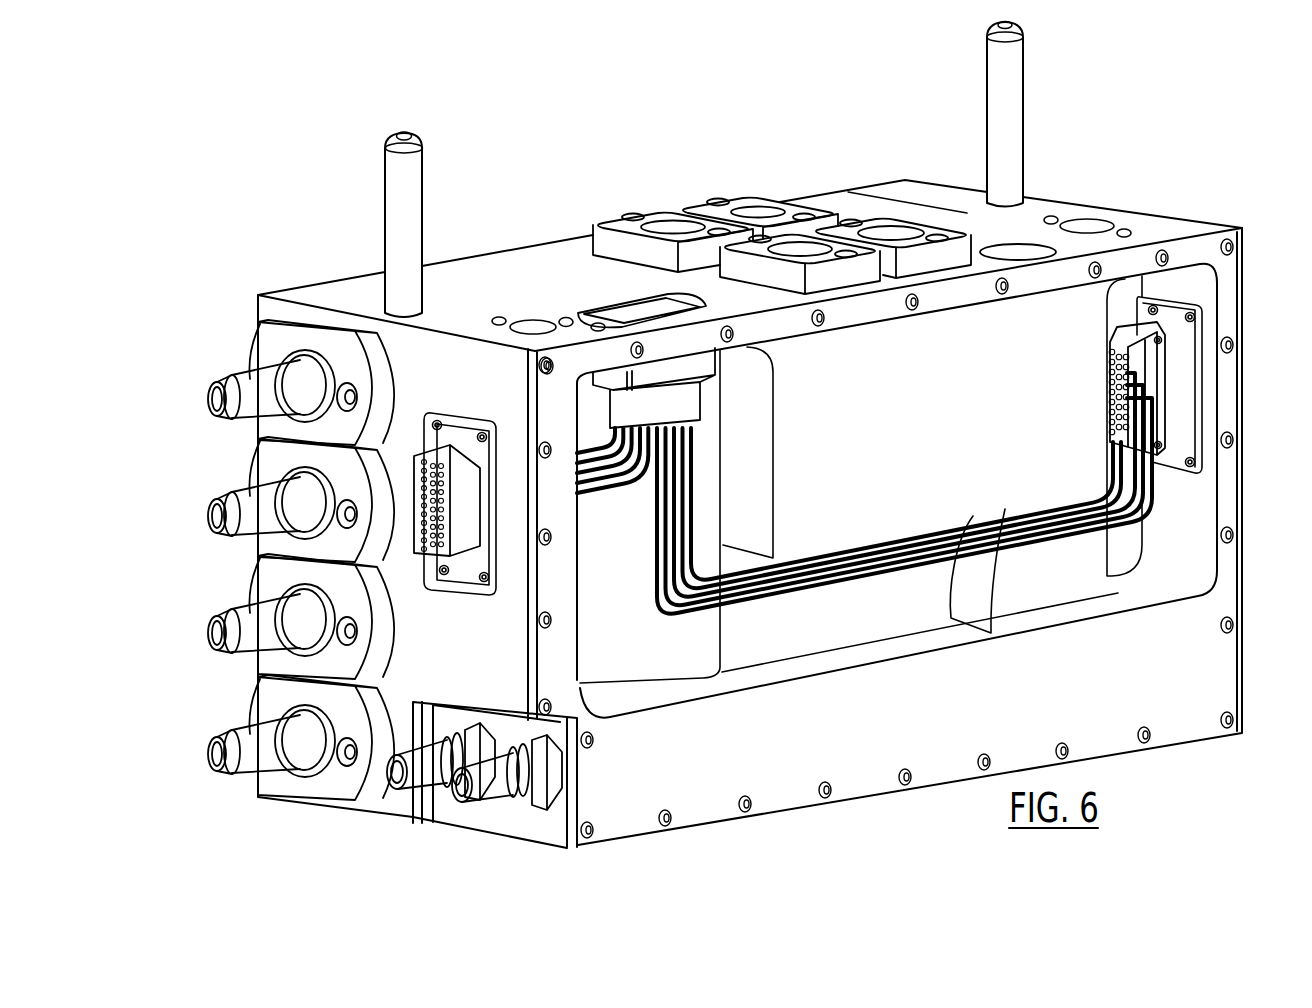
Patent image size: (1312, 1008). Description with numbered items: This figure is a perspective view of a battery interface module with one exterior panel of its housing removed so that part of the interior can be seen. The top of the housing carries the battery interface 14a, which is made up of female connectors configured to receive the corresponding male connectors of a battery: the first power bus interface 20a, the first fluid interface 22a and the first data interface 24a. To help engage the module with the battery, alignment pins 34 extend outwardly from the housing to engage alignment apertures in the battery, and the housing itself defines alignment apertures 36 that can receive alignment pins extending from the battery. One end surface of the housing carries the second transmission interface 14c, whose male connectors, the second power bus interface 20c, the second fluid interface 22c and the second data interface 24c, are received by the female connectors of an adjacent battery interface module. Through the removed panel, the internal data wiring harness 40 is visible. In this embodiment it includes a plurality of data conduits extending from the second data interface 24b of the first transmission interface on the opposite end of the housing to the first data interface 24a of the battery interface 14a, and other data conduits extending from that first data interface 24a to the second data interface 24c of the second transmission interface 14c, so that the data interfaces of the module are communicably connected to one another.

The battery interface 14a is at (1163, 225).
The second transmission interface 14c is at (437, 355).
The first power bus interface 20a is at (800, 240).
The second power bus interface 20c is at (250, 408).
The first fluid interface 22a is at (1023, 250).
The second fluid interface 22c is at (481, 770).
The first data interface 24a is at (630, 308).
The second data interface of the first transmission interface 24b is at (1178, 390).
The second data interface of the second transmission interface 24c is at (437, 433).
The alignment pin 34 is at (410, 227).
The alignment aperture 36 is at (542, 322).
The internal data wiring harness 40 is at (920, 572).